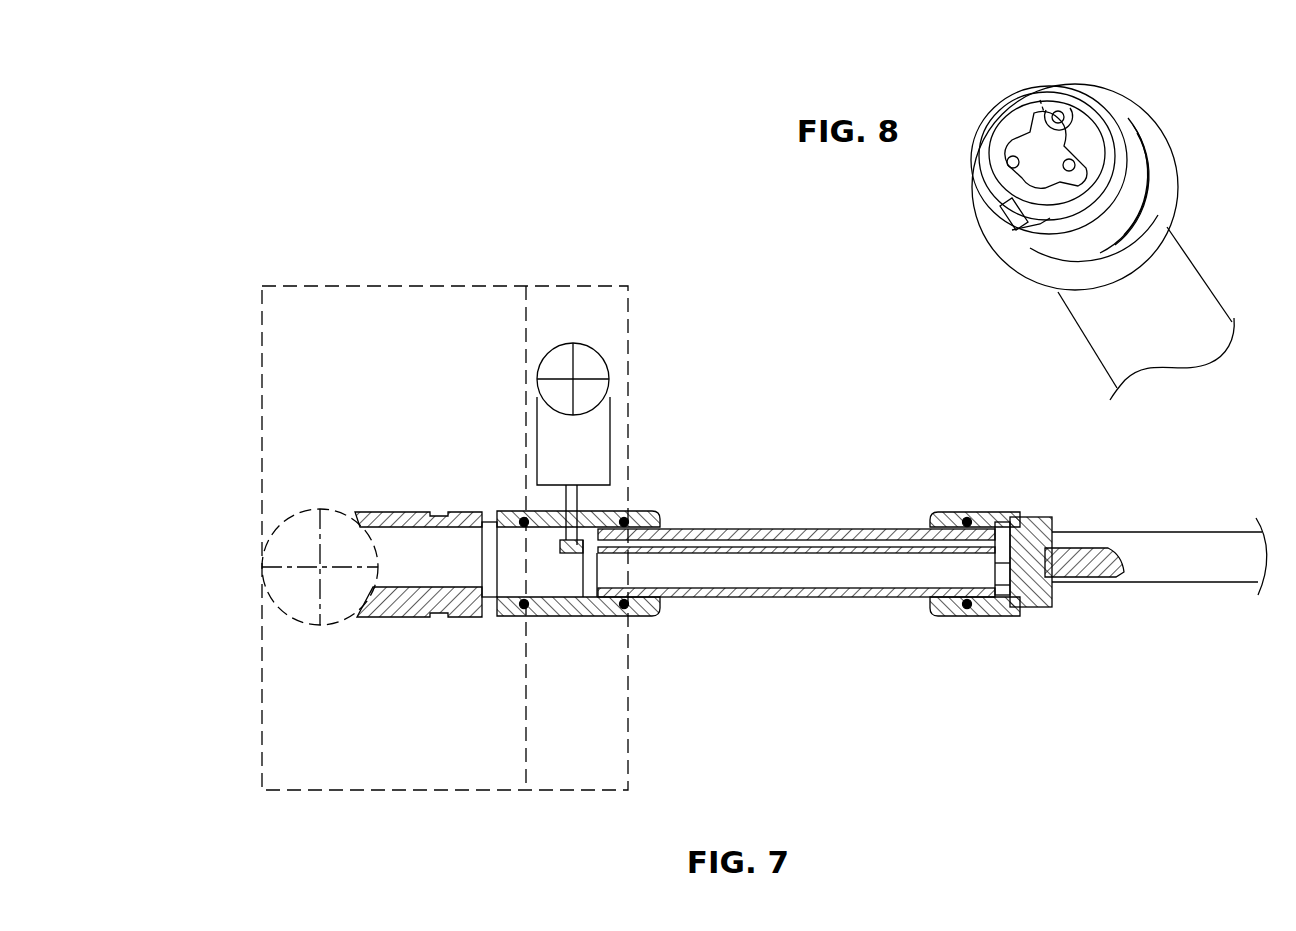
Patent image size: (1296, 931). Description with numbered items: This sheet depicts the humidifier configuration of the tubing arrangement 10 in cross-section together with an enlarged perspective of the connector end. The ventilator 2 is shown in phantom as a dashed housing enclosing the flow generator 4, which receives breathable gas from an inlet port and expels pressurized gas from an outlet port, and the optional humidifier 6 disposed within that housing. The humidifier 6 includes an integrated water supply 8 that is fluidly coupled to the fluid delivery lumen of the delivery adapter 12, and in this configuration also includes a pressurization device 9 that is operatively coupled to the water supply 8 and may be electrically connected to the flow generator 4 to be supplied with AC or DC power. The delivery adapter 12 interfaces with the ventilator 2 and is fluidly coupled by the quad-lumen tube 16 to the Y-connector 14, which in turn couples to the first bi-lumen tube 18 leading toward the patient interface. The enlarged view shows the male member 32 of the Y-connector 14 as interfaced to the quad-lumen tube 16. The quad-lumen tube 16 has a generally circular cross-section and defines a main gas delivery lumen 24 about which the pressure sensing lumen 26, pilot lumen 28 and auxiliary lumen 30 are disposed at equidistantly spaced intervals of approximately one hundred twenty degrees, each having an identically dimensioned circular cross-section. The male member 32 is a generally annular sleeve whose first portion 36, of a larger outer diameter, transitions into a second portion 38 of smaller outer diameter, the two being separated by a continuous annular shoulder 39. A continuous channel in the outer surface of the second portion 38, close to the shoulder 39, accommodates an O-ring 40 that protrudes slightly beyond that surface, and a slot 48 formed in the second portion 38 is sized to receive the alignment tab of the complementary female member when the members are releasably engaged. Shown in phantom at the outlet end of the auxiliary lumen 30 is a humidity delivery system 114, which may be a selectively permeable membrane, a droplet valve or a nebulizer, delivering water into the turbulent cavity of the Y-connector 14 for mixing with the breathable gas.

In FIG. 7, the ventilator 2 is at (591, 268).
In FIG. 7, the flow generator 4 is at (285, 590).
In FIG. 7, the humidifier 6 is at (662, 283).
In FIG. 7, the water supply 8 is at (598, 457).
In FIG. 7, the pressurization device 9 is at (603, 368).
In FIG. 7, the tubing arrangement 10 is at (1015, 497).
In FIG. 7, the delivery adapter 12 is at (590, 634).
In FIG. 7, the Y-connector 14 is at (1027, 625).
In FIG. 7, the quad-lumen tube 16 is at (847, 523).
In FIG. 8, the quad-lumen tube 16 is at (1215, 294).
In FIG. 7, the first bi-lumen tube 18 is at (1195, 520).
In FIG. 8, the main gas delivery lumen 24 is at (1035, 138).
In FIG. 8, the pressure sensing lumen 26 is at (1074, 169).
In FIG. 8, the pilot lumen 28 is at (1007, 162).
In FIG. 8, the auxiliary lumen 30 is at (1061, 110).
In FIG. 8, the male member 32 is at (1200, 152).
In FIG. 8, the first portion 36 is at (1020, 272).
In FIG. 8, the second portion 38 is at (1100, 106).
In FIG. 8, the shoulder 39 is at (1148, 142).
In FIG. 8, the O-ring 40 is at (1140, 184).
In FIG. 8, the slot 48 is at (1024, 214).
In FIG. 8, the humidity delivery system 114 is at (1046, 103).